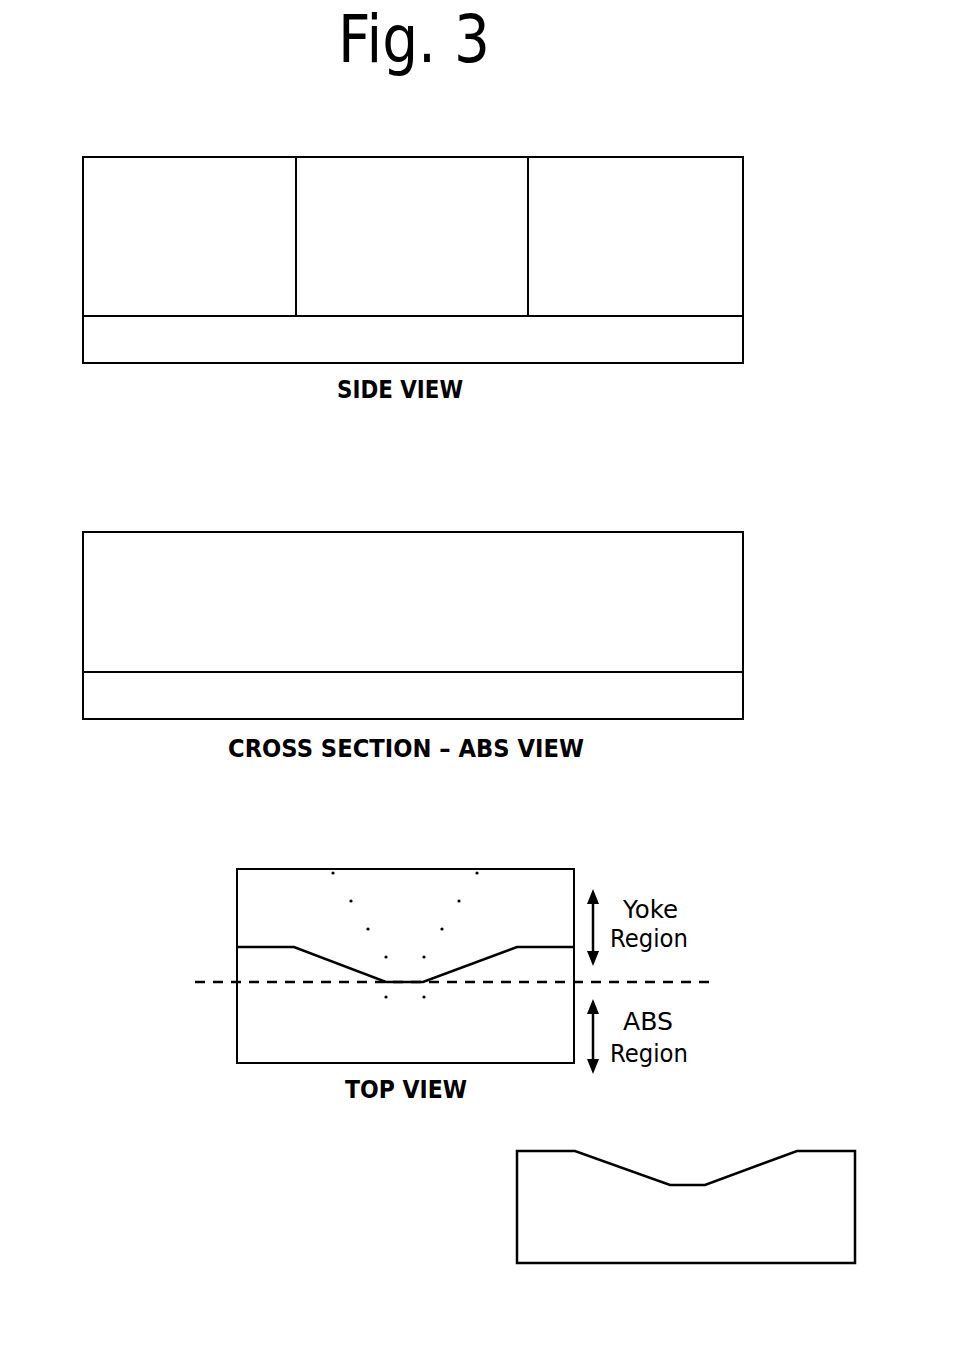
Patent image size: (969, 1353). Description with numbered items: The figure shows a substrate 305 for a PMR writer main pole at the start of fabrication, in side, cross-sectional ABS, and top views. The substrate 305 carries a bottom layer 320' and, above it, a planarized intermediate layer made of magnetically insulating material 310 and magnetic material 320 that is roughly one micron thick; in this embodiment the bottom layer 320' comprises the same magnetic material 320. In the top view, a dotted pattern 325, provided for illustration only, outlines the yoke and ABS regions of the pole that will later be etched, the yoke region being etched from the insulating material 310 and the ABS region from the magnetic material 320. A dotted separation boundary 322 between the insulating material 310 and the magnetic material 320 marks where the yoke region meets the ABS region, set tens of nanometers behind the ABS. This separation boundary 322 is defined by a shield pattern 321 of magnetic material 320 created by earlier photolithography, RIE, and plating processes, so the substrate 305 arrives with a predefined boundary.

The substrate 305 is at (693, 386).
The magnetically insulating material 310 is at (207, 248).
The magnetic material 320 is at (413, 627).
The bottom layer 320' is at (413, 522).
The dotted pattern 325 is at (488, 858).
The separation boundary 322 is at (481, 982).
The shield pattern 321 is at (462, 1020).